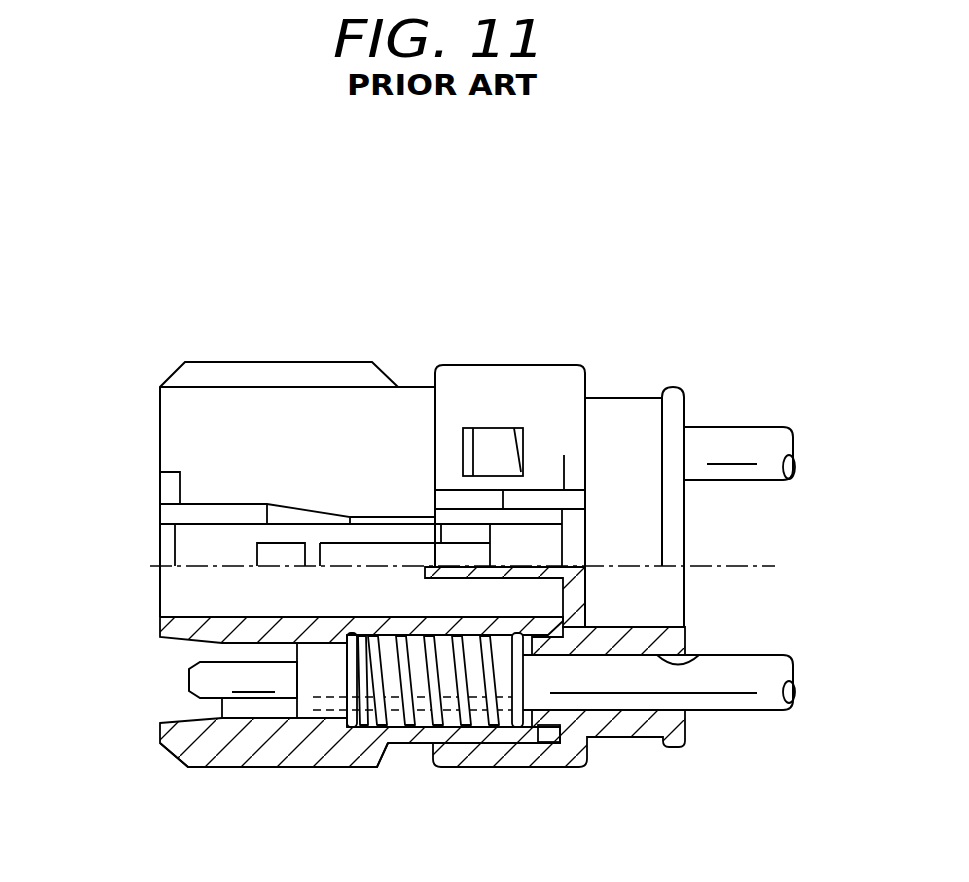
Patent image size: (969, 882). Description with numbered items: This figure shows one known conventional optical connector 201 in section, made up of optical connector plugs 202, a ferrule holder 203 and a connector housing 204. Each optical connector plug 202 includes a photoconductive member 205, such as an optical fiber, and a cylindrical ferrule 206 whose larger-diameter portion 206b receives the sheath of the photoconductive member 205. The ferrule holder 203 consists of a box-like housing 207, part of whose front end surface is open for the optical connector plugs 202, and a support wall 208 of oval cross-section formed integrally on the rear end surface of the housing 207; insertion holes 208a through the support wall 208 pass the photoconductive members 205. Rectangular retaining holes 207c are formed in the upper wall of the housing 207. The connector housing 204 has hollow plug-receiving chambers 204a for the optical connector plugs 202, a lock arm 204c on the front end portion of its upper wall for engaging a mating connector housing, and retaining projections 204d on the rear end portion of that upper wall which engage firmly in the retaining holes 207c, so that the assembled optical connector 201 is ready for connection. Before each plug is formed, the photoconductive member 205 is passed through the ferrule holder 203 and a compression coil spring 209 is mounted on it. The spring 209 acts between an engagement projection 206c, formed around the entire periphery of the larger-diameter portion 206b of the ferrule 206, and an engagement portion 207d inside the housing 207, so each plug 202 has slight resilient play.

The optical connector 201 is at (541, 197).
The optical connector plug 202 is at (198, 698).
The ferrule holder 203 is at (705, 288).
The connector housing 204 is at (257, 398).
The plug-receiving chamber 204a is at (185, 765).
The lock arm 204c is at (228, 513).
The retaining projection 204d is at (498, 443).
The photoconductive member 205 is at (745, 437).
The cylindrical ferrule 206 is at (236, 712).
The larger-diameter portion 206b is at (322, 726).
The engagement projection 206c is at (353, 722).
The box-like housing 207 is at (570, 380).
The retaining hole 207c is at (468, 440).
The engagement portion 207d is at (543, 727).
The support wall 208 is at (643, 412).
The insertion hole 208a is at (706, 655).
The compression coil spring 209 is at (465, 727).